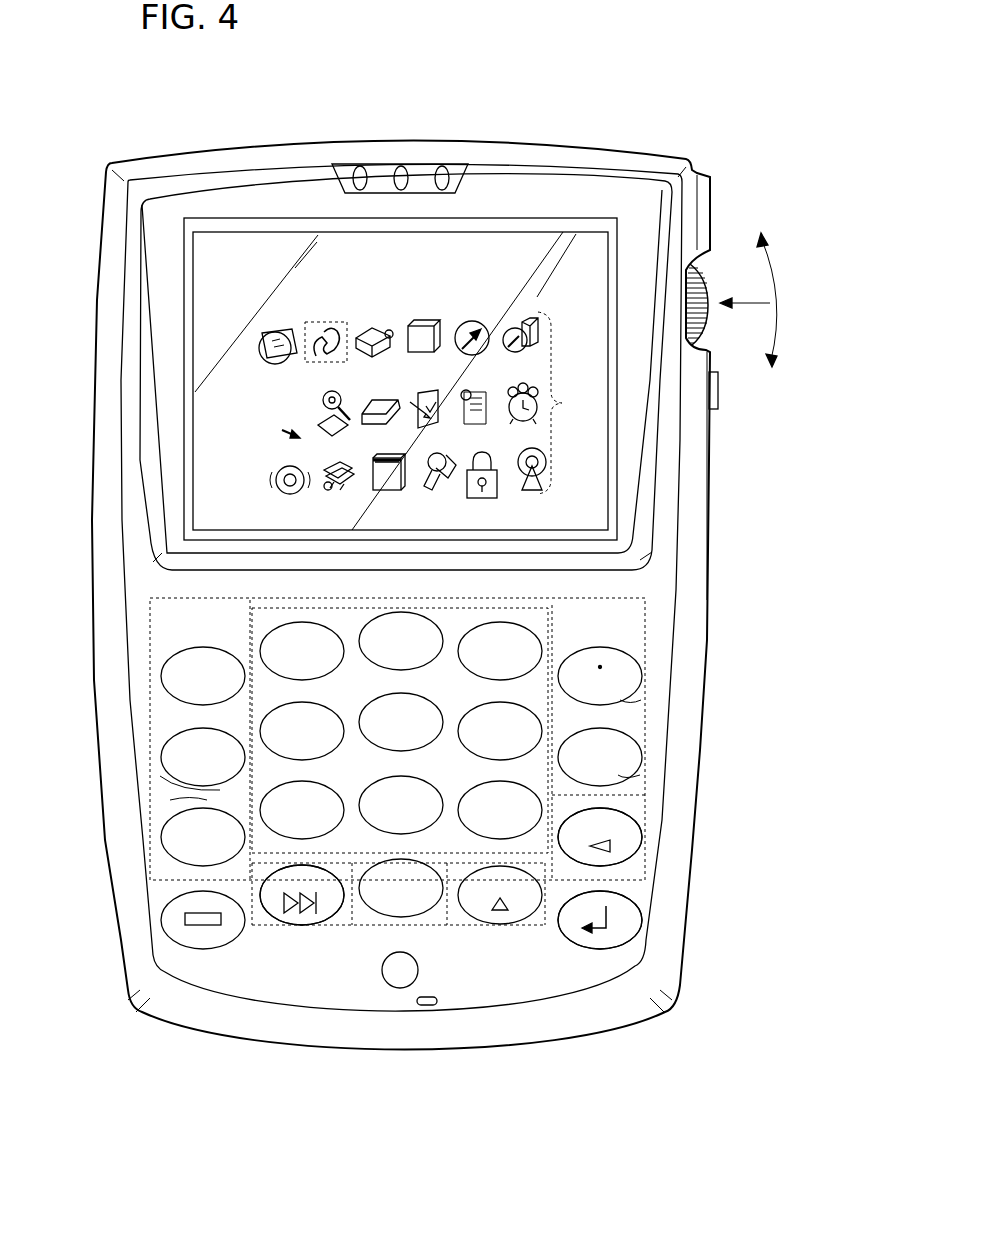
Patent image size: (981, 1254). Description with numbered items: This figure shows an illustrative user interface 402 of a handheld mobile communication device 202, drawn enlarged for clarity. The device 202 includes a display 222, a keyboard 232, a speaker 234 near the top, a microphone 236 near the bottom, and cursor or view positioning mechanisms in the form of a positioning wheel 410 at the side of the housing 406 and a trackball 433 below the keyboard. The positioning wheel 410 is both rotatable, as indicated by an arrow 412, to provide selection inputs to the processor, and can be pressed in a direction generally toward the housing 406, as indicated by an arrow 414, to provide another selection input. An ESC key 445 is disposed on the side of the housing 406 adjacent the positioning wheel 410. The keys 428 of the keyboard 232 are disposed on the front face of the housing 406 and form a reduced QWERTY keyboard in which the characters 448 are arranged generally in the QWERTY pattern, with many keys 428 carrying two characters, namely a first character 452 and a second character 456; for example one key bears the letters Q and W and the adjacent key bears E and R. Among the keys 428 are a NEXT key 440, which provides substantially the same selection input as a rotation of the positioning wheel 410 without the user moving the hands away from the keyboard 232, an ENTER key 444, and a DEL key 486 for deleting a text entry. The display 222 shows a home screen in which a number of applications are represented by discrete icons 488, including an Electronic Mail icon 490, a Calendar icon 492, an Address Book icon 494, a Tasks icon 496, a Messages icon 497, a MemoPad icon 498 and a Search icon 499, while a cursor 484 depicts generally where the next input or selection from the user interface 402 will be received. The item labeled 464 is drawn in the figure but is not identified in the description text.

The mobile device 202 is at (238, 143).
The speaker 234 is at (393, 172).
The housing 406 is at (566, 143).
The display 222 is at (592, 256).
The arrow indicating rotation of positioning wheel 412 is at (778, 250).
The arrow indicating pressing of positioning wheel 414 is at (757, 299).
The positioning wheel 410 is at (708, 330).
The ESC key 445 is at (719, 402).
The cursor 464 is at (452, 320).
The Electronic Mail icon 490 is at (272, 332).
The cursor 484 is at (326, 320).
The Address Book icon 494 is at (380, 323).
The Calendar icon 492 is at (424, 322).
The icons 488 is at (567, 404).
The Messages icon 497 is at (288, 400).
The Search icon 499 is at (336, 392).
The Tasks icon 496 is at (420, 392).
The MemoPad icon 498 is at (476, 392).
The user interface 402 is at (713, 607).
The keys 428 is at (168, 652).
The first character 452 is at (588, 674).
The second character 456 is at (608, 668).
The characters 448 is at (641, 700).
The keyboard 232 is at (640, 742).
The DEL key 486 is at (641, 840).
The ENTER key 444 is at (641, 908).
The NEXT key 440 is at (302, 925).
The trackball 433 is at (420, 952).
The microphone 236 is at (425, 1008).